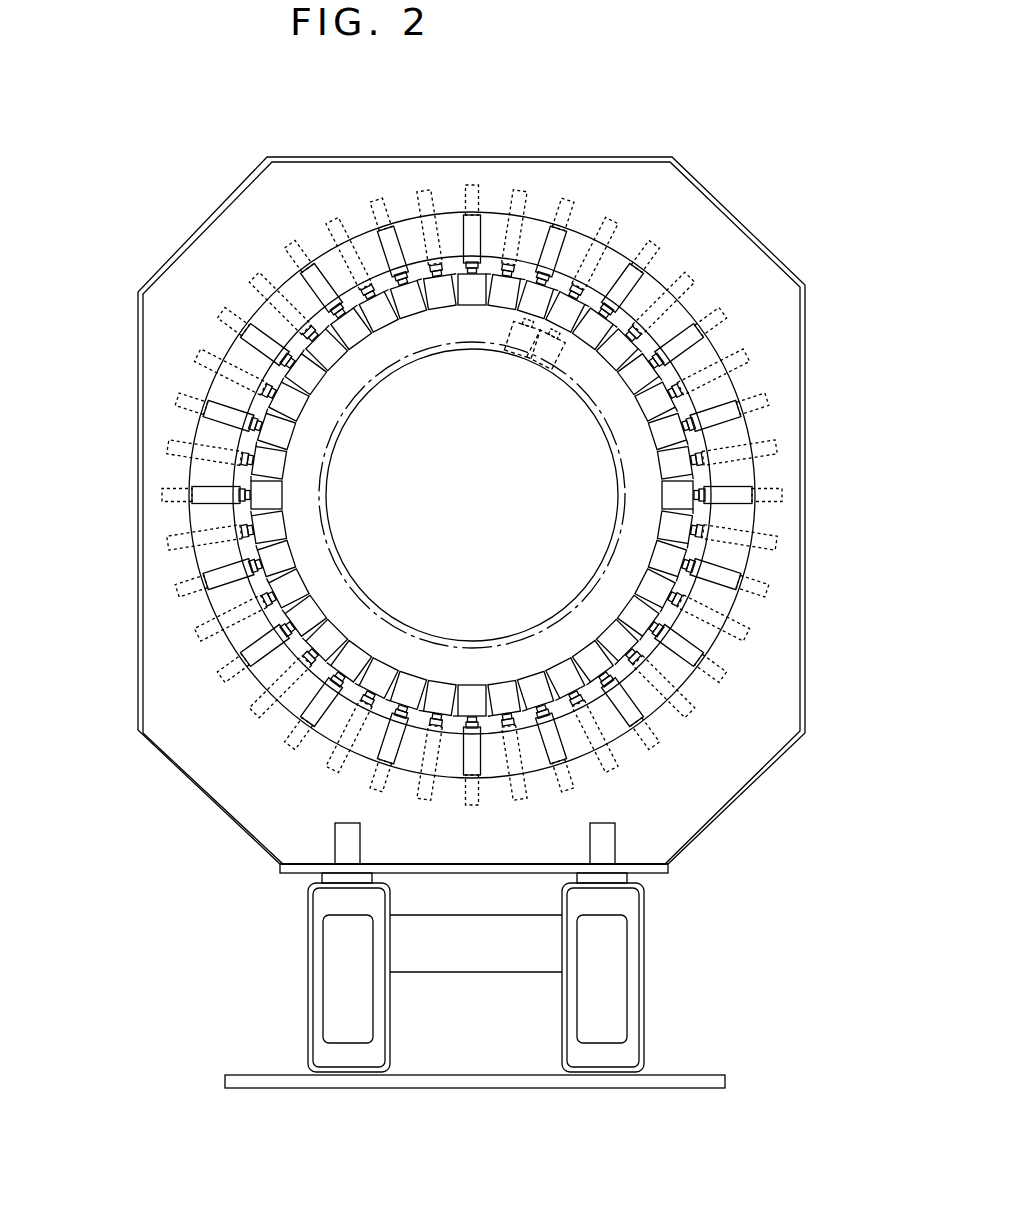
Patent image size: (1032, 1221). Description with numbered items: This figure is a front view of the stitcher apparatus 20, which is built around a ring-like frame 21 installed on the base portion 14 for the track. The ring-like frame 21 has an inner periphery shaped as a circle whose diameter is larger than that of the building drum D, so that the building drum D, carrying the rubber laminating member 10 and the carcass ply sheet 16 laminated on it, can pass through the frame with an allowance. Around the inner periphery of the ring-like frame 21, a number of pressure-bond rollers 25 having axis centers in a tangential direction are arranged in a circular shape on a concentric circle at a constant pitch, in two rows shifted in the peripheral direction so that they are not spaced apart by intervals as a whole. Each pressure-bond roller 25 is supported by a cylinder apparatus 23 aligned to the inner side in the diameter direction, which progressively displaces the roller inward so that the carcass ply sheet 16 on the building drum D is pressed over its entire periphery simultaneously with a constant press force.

The stitcher apparatus 20 is at (728, 162).
The ring-like frame 21 is at (220, 292).
The pressure-bond rollers 25 is at (565, 313).
The cylinder apparatus 23 is at (687, 343).
The rubber laminating member 10 is at (627, 492).
The building drum D is at (577, 563).
The carcass ply sheet 16 is at (330, 518).
The base portion 14 is at (308, 983).